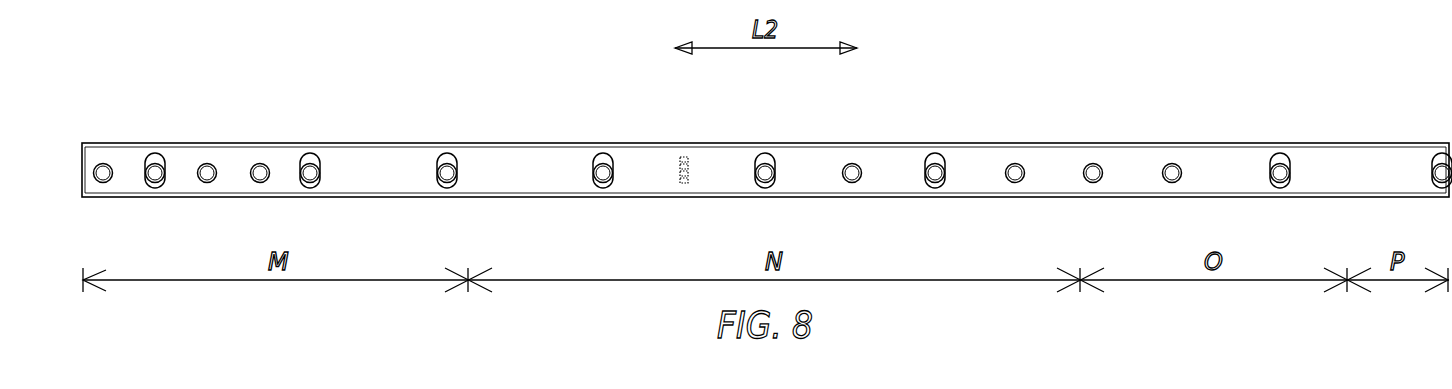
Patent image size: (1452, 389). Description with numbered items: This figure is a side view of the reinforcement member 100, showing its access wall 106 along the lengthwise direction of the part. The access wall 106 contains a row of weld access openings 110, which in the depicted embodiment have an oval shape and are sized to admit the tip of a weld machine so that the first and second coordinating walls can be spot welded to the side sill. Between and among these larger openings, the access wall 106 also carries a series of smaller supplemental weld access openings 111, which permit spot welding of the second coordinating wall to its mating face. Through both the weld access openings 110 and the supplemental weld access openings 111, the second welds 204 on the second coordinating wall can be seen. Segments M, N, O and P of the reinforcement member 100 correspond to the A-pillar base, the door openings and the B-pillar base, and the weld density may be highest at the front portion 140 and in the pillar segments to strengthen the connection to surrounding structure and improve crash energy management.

The reinforcement member 100 is at (1214, 66).
The access wall 106 is at (1057, 173).
The weld access opening 110 is at (155, 154).
The supplemental weld access opening 111 is at (103, 163).
The front portion 140 is at (237, 158).
The second weld 204 is at (104, 174).